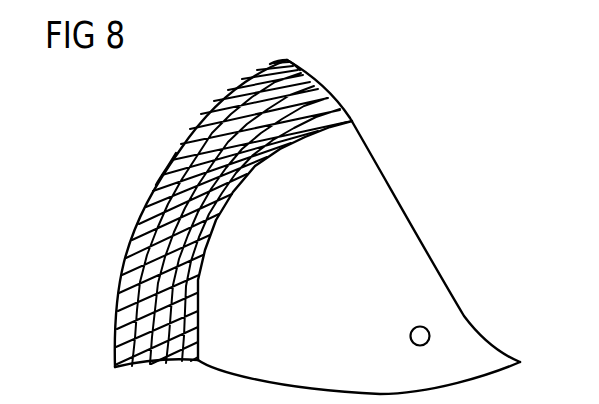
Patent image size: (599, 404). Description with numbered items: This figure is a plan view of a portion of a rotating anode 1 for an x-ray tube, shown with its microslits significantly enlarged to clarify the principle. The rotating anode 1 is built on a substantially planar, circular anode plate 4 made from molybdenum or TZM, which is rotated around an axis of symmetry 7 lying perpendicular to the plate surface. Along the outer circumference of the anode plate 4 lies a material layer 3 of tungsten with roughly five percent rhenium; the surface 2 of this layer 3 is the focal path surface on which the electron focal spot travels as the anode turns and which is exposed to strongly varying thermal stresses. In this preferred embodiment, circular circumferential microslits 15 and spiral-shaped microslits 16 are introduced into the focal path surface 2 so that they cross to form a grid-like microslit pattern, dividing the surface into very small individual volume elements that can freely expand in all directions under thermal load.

The rotating anode 1 is at (430, 161).
The focal path surface 2 is at (203, 128).
The material layer 3 is at (115, 303).
The anode plate 4 is at (404, 221).
The axis of symmetry 7 is at (410, 336).
The circular circumferential microslits 15 is at (300, 69).
The spiral-shaped microslits 16 is at (164, 176).